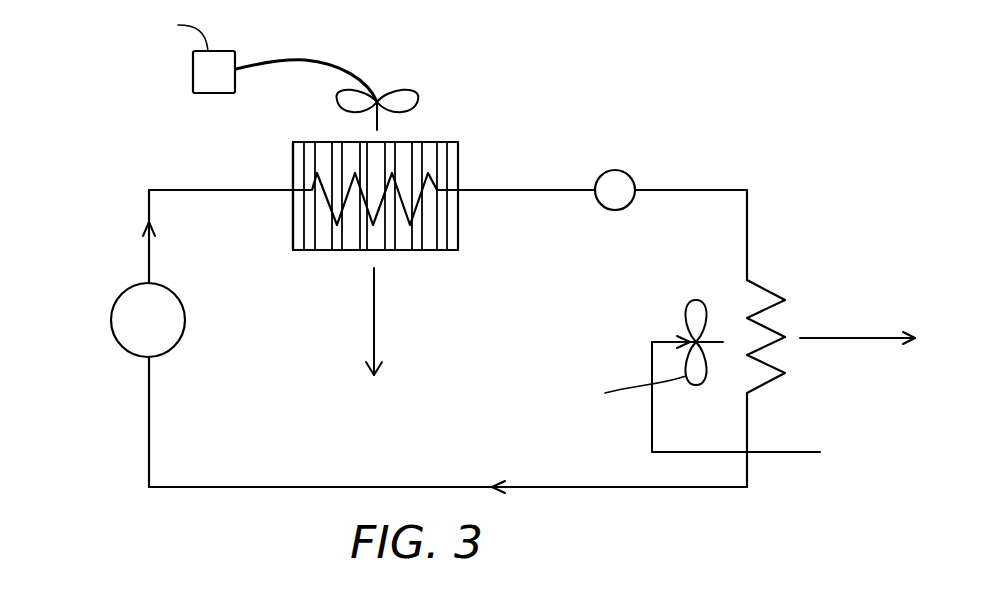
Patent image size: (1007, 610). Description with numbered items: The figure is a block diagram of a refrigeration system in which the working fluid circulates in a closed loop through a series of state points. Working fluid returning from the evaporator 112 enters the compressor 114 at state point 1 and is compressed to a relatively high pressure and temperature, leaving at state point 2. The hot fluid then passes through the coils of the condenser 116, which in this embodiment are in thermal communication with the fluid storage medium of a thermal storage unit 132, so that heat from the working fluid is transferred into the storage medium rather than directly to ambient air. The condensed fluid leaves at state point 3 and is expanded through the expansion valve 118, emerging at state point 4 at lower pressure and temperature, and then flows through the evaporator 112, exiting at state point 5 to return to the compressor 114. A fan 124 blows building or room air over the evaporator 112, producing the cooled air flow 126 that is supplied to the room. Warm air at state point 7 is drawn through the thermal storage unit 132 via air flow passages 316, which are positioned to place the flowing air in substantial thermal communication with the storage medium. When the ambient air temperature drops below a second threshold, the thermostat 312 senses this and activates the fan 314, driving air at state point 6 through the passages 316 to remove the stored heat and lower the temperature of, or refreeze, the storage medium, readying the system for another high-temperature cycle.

The state point 1 (compressor inlet) 1 is at (138, 422).
The state point 2 (compressor outlet) 2 is at (140, 236).
The state point 3 (heat exchanger outlet) 3 is at (516, 176).
The state point 4 (expansion valve outlet) 4 is at (691, 219).
The state point 5 (evaporator outlet) 5 is at (762, 440).
The state point 6 (air at fan) 6 is at (387, 100).
The state point 7 (warm air flow) 7 is at (398, 321).
The evaporator 112 is at (766, 290).
The compressor 114 is at (187, 328).
The condenser 116 is at (437, 190).
The expansion valve 118 is at (625, 172).
The fan 124 is at (688, 312).
The cooled air flow 126 is at (832, 340).
The thermal storage unit 132 is at (453, 212).
The thermostat 312 is at (202, 73).
The fan 314 is at (420, 100).
The air flow passages 316 is at (309, 245).